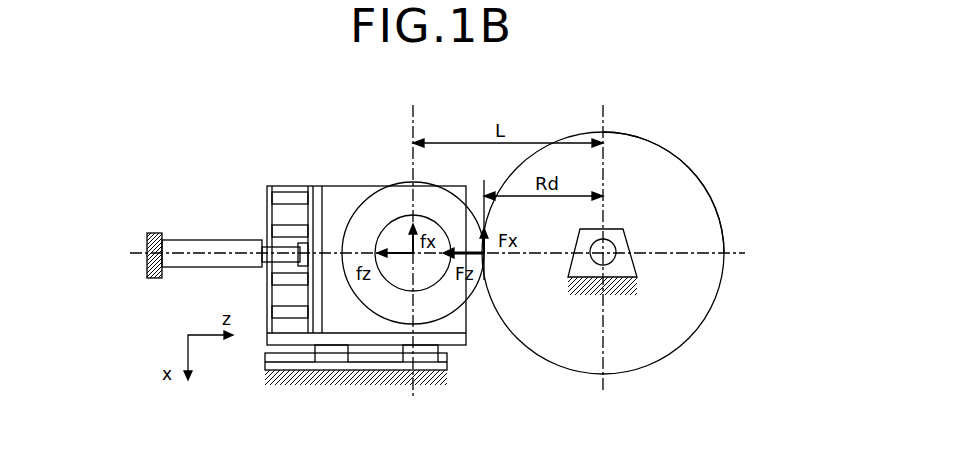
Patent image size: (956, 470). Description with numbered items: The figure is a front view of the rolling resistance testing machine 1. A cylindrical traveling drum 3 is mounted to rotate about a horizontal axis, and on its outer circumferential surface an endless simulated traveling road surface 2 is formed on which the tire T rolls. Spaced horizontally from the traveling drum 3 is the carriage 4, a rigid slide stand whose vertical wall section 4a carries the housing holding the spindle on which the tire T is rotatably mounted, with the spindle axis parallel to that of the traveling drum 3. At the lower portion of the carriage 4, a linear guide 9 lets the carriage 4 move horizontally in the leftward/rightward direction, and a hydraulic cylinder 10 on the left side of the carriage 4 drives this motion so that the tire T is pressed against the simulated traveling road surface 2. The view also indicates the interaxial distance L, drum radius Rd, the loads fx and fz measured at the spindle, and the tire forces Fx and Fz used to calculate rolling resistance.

The rolling resistance testing machine 1 is at (620, 99).
The simulated traveling road surface 2 is at (704, 181).
The traveling drum 3 is at (651, 152).
The carriage 4 is at (268, 184).
The vertical wall section 4a is at (337, 194).
The linear guide 9 is at (432, 352).
The hydraulic cylinder 10 is at (207, 240).
The tire T is at (397, 185).